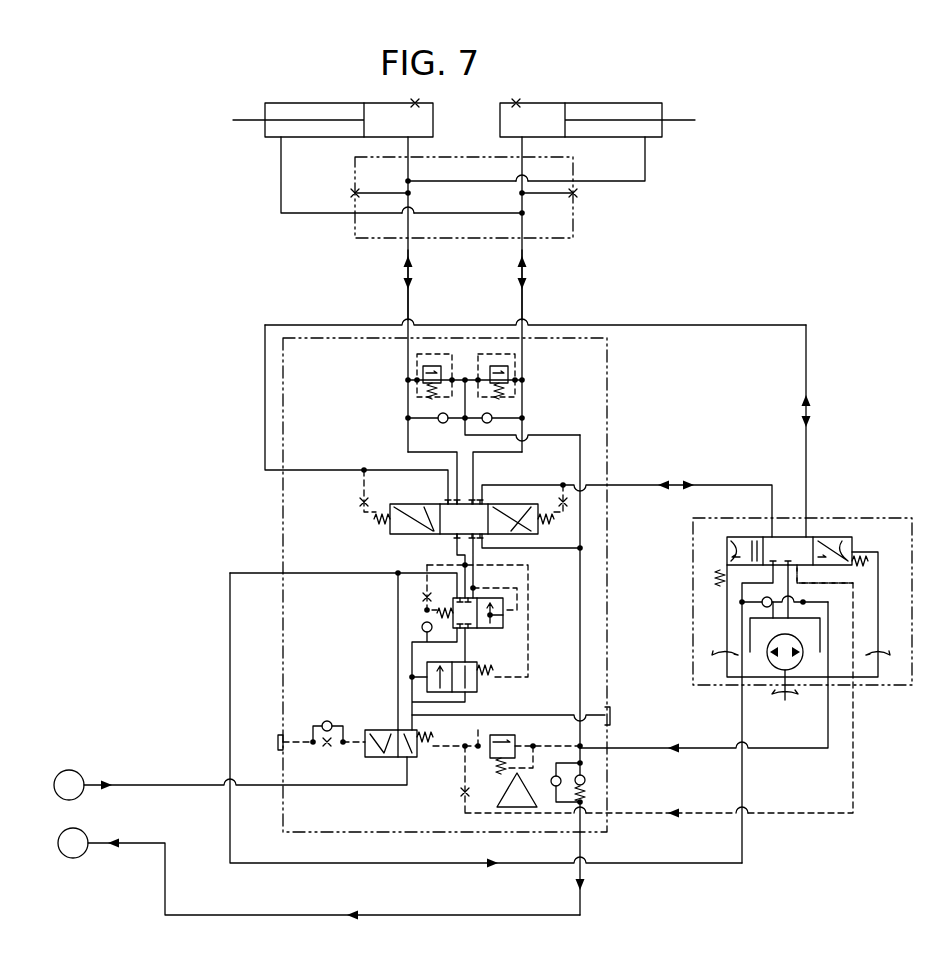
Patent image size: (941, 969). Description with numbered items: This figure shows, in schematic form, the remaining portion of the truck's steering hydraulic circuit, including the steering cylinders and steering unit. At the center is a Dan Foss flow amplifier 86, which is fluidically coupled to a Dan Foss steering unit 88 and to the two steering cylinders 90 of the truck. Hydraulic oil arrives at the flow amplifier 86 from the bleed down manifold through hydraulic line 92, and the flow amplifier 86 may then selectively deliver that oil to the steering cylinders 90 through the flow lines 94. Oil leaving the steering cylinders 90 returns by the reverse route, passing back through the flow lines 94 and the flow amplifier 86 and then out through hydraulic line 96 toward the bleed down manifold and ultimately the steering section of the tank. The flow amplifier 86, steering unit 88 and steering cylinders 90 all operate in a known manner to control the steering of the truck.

The flow amplifier 86 is at (284, 561).
The steering unit 88 is at (828, 518).
The steering cylinders 90 is at (273, 130).
The hydraulic line 92 is at (170, 784).
The flow lines 94 is at (408, 303).
The hydraulic line 96 is at (163, 897).